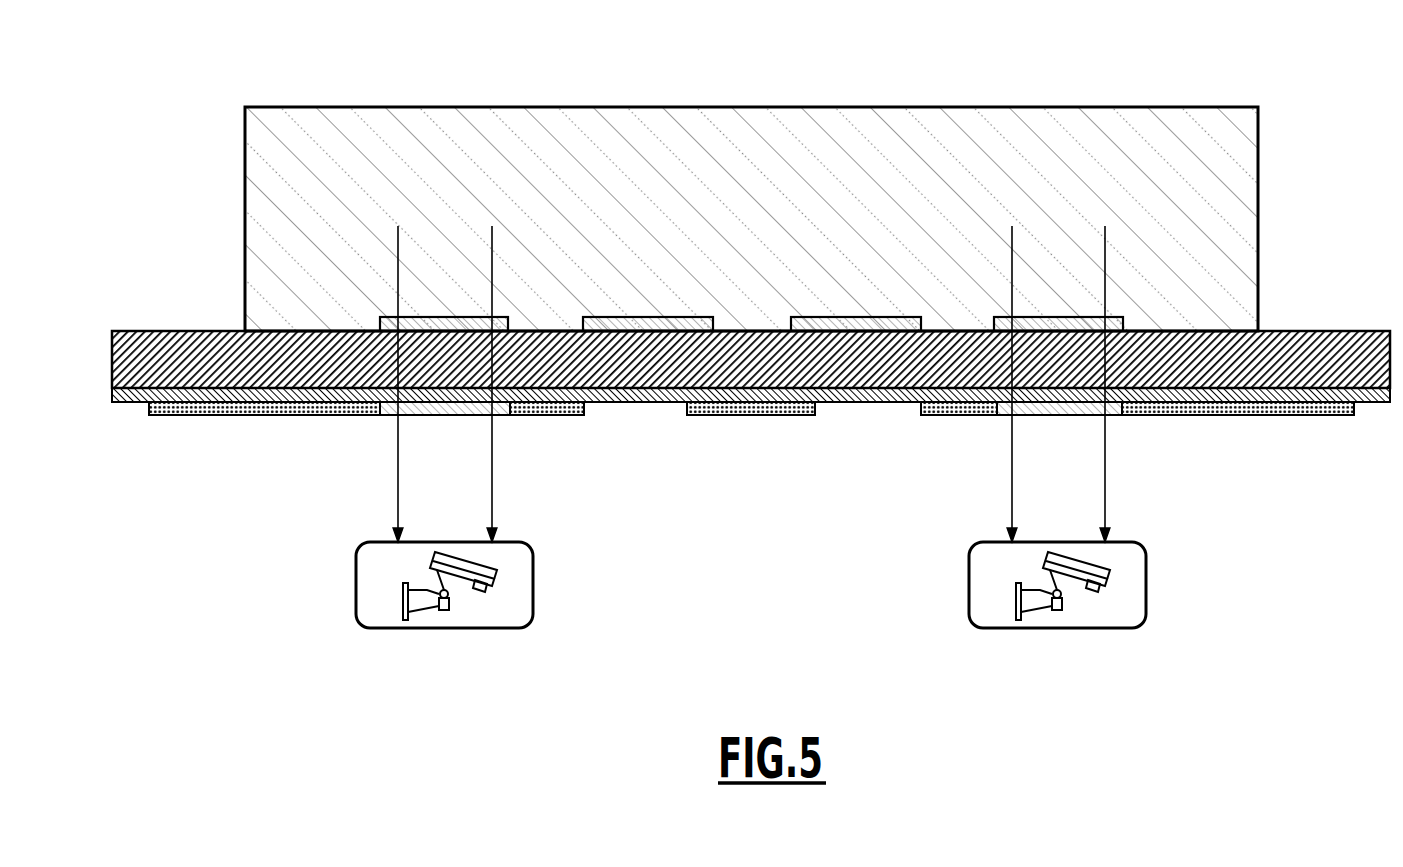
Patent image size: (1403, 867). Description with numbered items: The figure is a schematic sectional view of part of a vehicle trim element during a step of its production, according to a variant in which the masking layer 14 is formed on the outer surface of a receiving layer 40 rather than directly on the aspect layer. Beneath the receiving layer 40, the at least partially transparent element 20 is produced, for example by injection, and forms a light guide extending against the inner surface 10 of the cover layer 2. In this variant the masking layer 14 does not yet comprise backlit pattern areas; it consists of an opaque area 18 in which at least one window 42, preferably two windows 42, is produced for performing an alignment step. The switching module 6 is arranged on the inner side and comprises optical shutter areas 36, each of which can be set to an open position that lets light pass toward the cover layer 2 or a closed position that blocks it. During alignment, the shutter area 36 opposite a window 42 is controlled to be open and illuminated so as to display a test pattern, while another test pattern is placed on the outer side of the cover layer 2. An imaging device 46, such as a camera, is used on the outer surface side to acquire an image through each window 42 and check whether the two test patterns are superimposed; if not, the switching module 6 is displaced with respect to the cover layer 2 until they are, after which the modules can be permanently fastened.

The cover layer 2 is at (1326, 415).
The switching module 6 is at (753, 165).
The inner surface 10 is at (878, 402).
The masking layer 14 is at (750, 415).
The opaque area 18 is at (320, 415).
The at least partially transparent element 20 is at (1337, 345).
The optical shutter area 36 is at (840, 317).
The receiving layer 40 is at (1366, 402).
The window 42 is at (432, 415).
The imaging device 46 is at (468, 585).